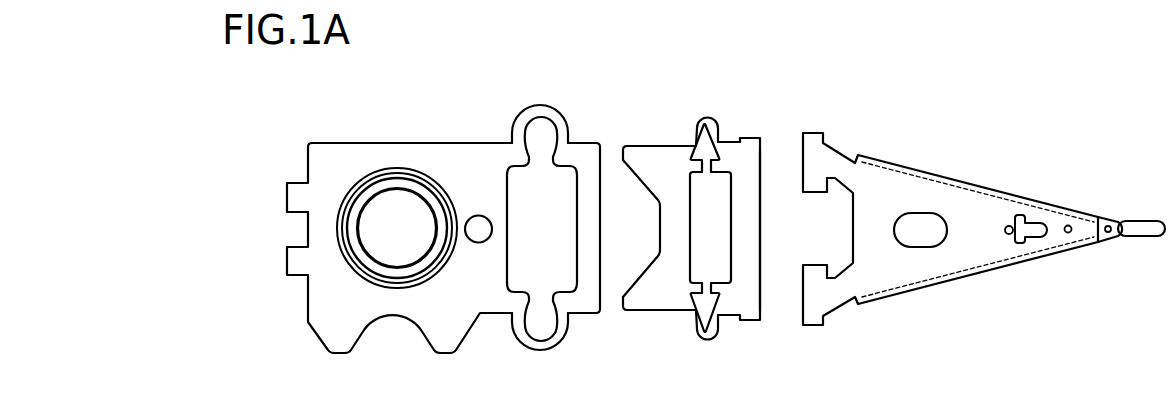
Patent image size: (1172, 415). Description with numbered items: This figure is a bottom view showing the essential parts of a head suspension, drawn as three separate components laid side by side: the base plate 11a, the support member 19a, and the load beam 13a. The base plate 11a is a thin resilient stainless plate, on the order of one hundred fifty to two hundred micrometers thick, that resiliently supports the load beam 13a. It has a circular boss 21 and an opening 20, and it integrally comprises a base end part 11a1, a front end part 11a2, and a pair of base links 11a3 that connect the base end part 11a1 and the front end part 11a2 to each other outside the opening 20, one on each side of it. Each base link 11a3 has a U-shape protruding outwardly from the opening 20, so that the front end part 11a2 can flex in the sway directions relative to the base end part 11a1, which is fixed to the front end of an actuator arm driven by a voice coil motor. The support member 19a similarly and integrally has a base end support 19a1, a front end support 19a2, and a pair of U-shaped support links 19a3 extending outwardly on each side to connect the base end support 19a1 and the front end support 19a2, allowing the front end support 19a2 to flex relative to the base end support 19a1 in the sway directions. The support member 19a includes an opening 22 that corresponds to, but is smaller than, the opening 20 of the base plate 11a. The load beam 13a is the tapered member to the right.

The base plate 11a is at (427, 122).
The base end part 11a1 is at (503, 205).
The front end part 11a2 is at (593, 175).
The base links 11a3 is at (533, 112).
The opening 20 is at (520, 220).
The circular boss 21 is at (360, 225).
The support member 19a is at (677, 118).
The base end support 19a1 is at (682, 193).
The front end support 19a2 is at (742, 192).
The support links 19a3 is at (707, 117).
The opening 22 is at (728, 192).
The load beam 13a is at (928, 122).